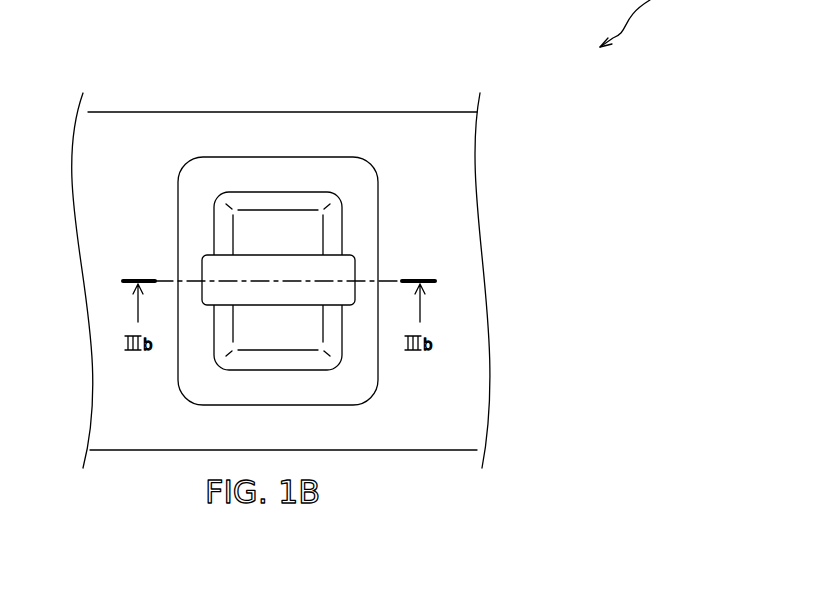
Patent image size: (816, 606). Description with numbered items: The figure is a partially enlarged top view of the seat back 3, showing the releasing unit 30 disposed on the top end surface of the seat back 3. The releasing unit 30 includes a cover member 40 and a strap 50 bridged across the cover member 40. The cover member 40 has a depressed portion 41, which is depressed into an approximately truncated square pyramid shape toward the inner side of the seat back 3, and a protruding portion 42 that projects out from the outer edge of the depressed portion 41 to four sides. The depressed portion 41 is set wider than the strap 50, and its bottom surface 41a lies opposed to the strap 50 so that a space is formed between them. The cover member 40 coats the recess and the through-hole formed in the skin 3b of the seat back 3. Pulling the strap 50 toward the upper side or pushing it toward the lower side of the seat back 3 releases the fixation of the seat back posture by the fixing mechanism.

The seat back 3 is at (510, 98).
The skin 3b is at (447, 182).
The releasing unit 30 is at (375, 145).
The cover member 40 is at (167, 167).
The depressed portion 41 is at (278, 281).
The bottom surface 41a is at (272, 237).
The protruding portion 42 is at (317, 177).
The strap 50 is at (283, 290).